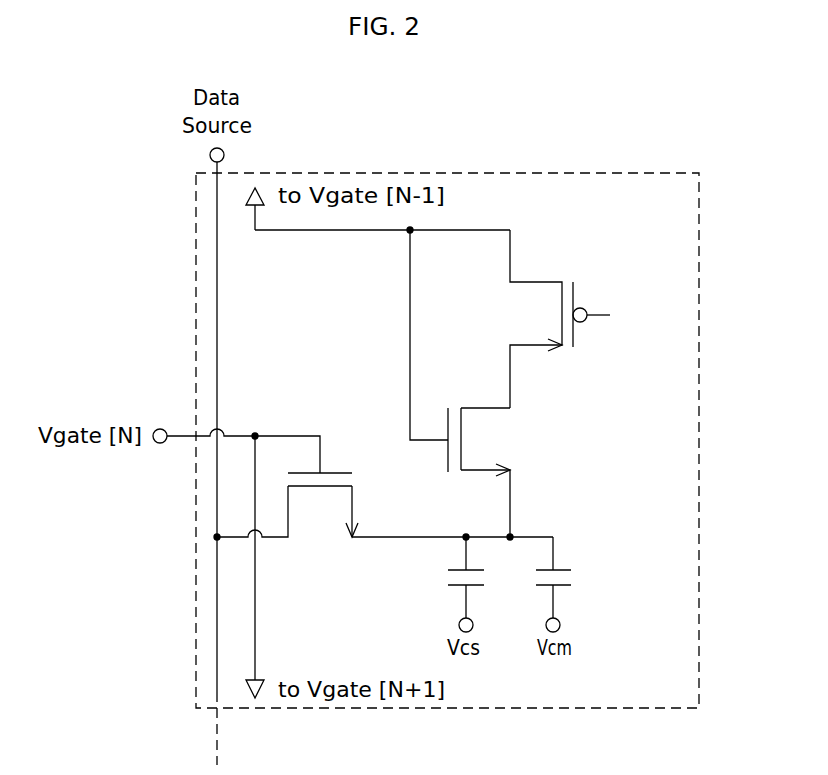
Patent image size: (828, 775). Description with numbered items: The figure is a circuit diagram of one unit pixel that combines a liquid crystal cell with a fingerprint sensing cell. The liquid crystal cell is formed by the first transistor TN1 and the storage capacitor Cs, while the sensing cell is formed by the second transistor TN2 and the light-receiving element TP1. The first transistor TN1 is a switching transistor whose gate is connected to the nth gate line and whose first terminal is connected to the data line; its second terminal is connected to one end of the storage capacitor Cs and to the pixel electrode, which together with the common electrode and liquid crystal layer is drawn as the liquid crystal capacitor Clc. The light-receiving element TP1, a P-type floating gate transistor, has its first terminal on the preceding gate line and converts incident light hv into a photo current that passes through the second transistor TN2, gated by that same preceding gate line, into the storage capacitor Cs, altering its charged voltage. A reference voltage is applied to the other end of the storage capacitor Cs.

The light-receiving element TP1 is at (510, 335).
The first transistor TN1 is at (323, 520).
The second transistor TN2 is at (498, 472).
The storage capacitor Cs is at (473, 583).
The liquid crystal capacitor Clc is at (569, 584).
The incident light hv is at (591, 296).